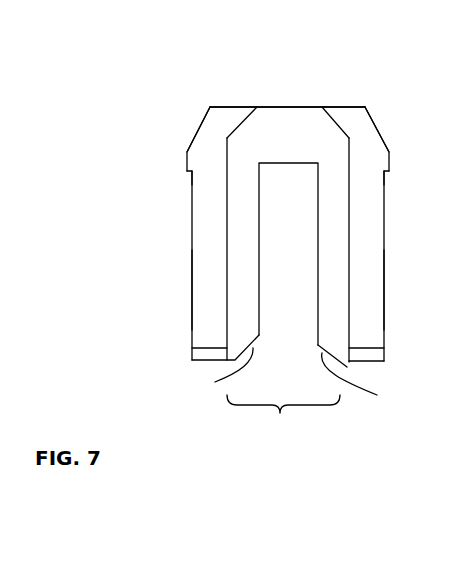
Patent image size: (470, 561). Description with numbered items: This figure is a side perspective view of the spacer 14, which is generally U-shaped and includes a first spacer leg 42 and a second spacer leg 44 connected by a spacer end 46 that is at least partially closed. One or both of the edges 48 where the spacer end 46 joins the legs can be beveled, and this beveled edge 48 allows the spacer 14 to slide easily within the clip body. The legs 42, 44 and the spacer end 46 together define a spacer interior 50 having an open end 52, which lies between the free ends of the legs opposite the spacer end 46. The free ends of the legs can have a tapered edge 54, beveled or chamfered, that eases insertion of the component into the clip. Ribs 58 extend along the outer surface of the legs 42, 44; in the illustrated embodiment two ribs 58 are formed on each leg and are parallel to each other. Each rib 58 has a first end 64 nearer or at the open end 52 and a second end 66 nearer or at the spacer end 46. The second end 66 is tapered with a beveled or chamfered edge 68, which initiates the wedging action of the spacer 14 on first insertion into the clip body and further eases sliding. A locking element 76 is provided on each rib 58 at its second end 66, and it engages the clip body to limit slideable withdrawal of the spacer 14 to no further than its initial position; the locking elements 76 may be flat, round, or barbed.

The spacer 14 is at (127, 95).
The spacer end 46 is at (281, 106).
The second end 66 is at (219, 107).
The chamfered edge 68 is at (198, 131).
The beveled edge 48 is at (230, 107).
The locking element 76 is at (190, 172).
The second spacer leg 44 is at (213, 250).
The first spacer leg 42 is at (366, 232).
The rib 58 is at (205, 297).
The spacer interior 50 is at (300, 214).
The first end 64 is at (203, 362).
The tapered edge 54 is at (286, 383).
The open end 52 is at (283, 420).